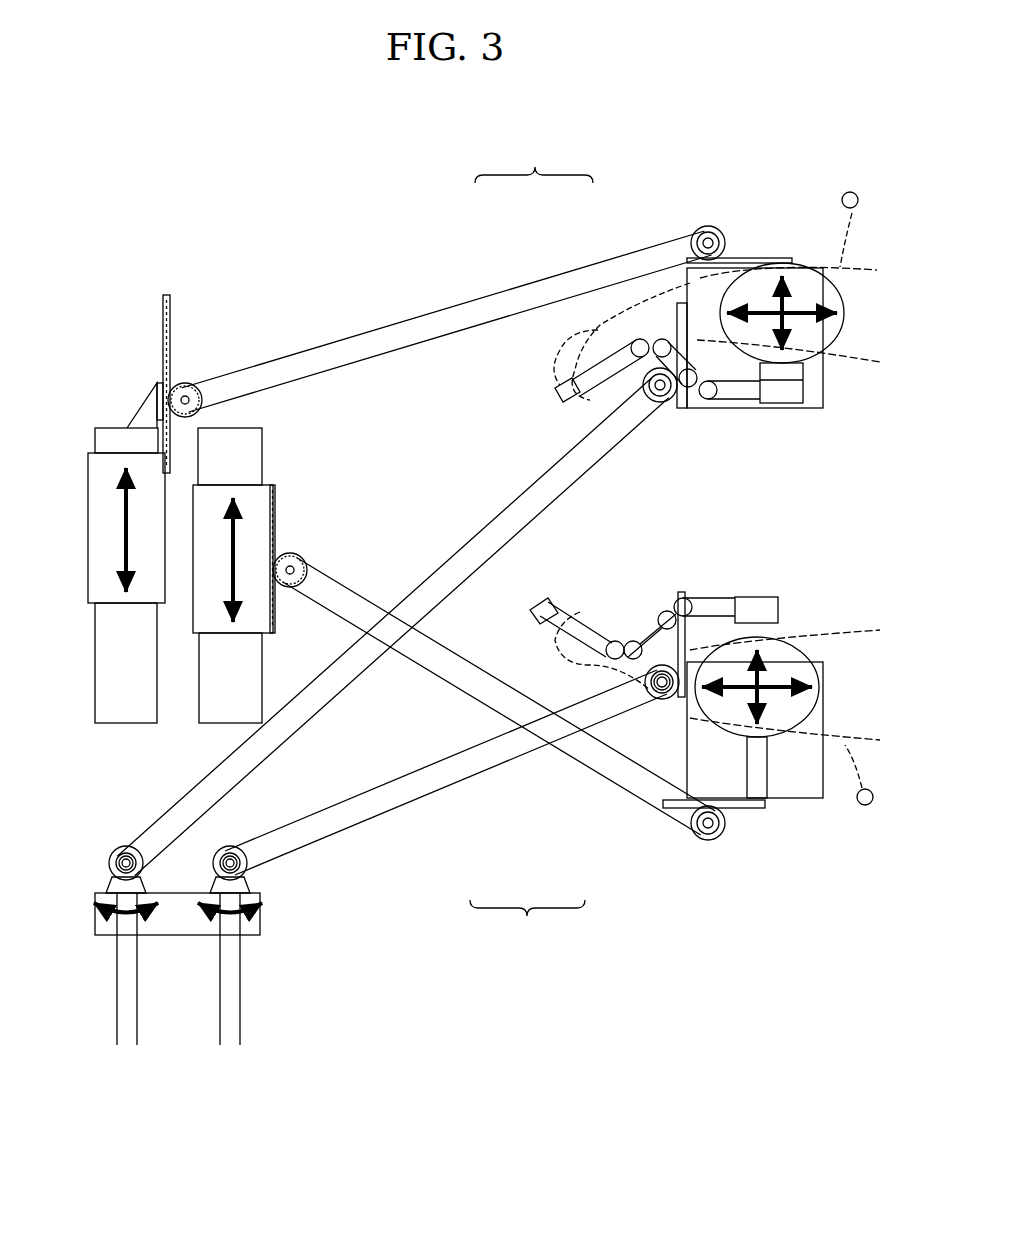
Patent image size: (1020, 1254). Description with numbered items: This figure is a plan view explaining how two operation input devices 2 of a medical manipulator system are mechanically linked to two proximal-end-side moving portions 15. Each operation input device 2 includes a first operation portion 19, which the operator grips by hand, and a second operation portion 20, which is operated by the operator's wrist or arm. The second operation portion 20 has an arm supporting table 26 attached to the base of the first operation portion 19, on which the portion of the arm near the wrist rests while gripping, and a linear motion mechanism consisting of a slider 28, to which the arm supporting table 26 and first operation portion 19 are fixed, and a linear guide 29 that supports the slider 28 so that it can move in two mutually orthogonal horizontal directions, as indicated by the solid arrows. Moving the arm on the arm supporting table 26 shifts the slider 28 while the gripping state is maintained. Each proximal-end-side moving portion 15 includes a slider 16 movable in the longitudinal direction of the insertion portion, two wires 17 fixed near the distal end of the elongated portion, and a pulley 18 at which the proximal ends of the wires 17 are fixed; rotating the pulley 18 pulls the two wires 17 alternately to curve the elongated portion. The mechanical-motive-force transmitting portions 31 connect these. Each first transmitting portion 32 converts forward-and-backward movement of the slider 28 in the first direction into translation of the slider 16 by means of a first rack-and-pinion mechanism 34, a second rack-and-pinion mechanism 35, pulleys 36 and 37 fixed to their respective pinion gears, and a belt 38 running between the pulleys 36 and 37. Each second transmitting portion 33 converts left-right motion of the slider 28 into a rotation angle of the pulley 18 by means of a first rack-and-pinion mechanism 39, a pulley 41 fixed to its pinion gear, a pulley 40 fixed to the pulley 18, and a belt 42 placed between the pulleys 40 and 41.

The operation input device 2 is at (807, 230).
The proximal-end-side moving portion 15 is at (105, 818).
The slider 16 is at (88, 545).
The wire 17 is at (137, 965).
The pulley 18 is at (109, 863).
The first operation portion 19 is at (612, 605).
The second operation portion 20 is at (834, 370).
The arm supporting table 26 is at (845, 325).
The slider 28 is at (800, 392).
The linear guide 29 is at (752, 410).
The mechanical-motive-force transmitting portion 31 is at (531, 543).
The first transmitting portion 32 is at (655, 236).
The second transmitting portion 33 is at (503, 468).
The first rack-and-pinion mechanism 34 is at (732, 242).
The second rack-and-pinion mechanism 35 is at (186, 378).
The pulley 36 is at (708, 226).
The pulley 37 is at (203, 400).
The belt 38 is at (407, 319).
The first rack-and-pinion mechanism 39 is at (664, 407).
The pulley 40 is at (112, 852).
The pulley 41 is at (652, 695).
The belt 42 is at (440, 565).